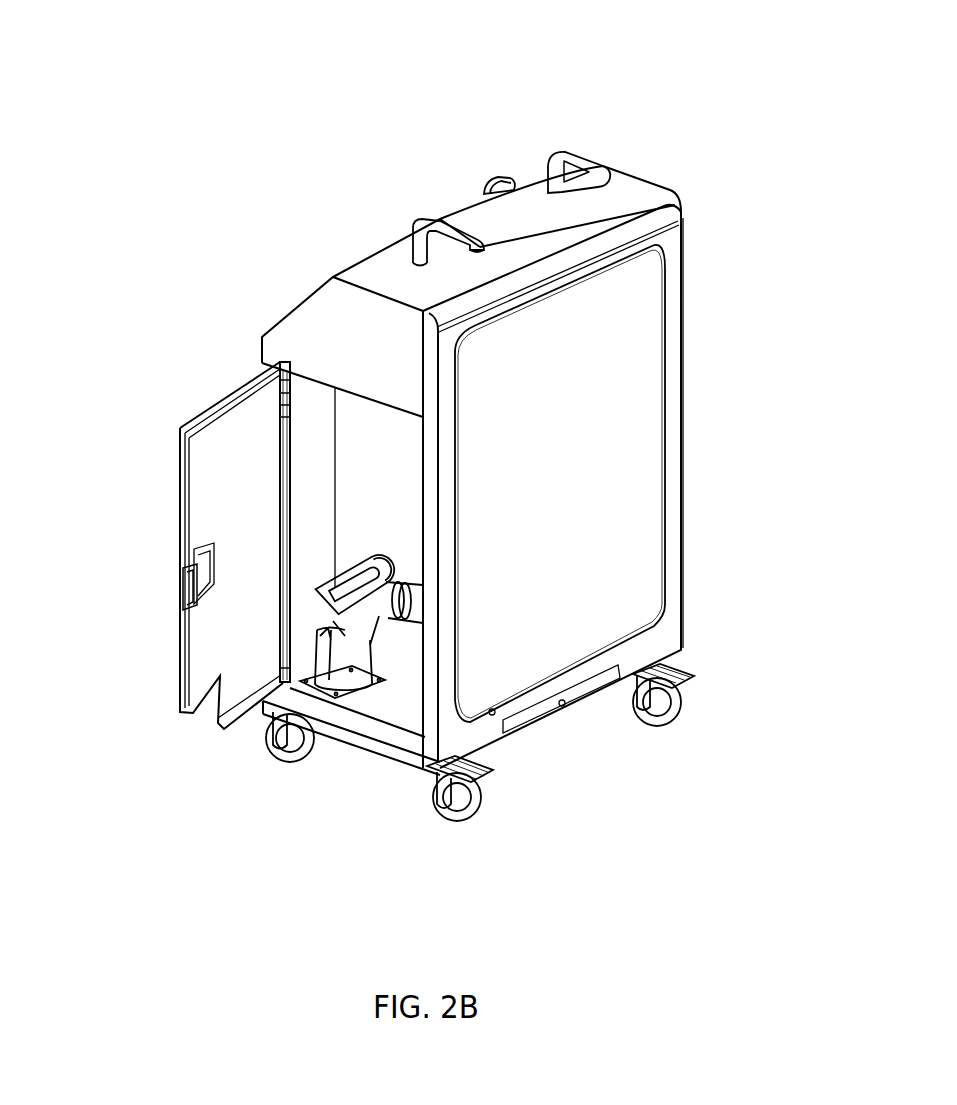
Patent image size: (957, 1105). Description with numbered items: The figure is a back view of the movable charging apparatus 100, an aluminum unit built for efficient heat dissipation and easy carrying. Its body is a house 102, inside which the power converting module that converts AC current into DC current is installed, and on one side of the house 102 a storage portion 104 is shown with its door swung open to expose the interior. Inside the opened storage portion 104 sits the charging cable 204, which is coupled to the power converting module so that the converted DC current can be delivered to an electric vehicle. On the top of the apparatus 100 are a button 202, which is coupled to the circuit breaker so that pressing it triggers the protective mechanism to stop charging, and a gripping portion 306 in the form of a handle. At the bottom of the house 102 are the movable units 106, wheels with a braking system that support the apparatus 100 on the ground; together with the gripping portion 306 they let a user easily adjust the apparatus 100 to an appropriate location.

The movable charging apparatus 100 is at (63, 34).
The house 102 is at (686, 370).
The storage portion 104 is at (296, 413).
The movable units 106 is at (437, 805).
The button 202 is at (486, 186).
The charging cable 204 is at (373, 549).
The gripping portion 306 is at (582, 150).